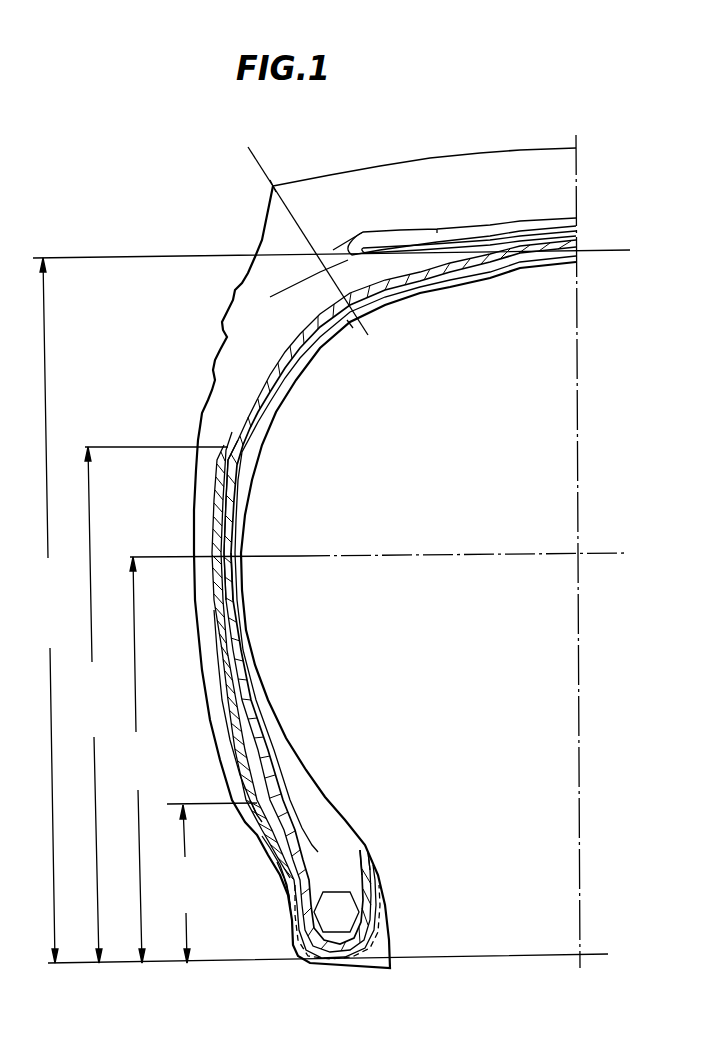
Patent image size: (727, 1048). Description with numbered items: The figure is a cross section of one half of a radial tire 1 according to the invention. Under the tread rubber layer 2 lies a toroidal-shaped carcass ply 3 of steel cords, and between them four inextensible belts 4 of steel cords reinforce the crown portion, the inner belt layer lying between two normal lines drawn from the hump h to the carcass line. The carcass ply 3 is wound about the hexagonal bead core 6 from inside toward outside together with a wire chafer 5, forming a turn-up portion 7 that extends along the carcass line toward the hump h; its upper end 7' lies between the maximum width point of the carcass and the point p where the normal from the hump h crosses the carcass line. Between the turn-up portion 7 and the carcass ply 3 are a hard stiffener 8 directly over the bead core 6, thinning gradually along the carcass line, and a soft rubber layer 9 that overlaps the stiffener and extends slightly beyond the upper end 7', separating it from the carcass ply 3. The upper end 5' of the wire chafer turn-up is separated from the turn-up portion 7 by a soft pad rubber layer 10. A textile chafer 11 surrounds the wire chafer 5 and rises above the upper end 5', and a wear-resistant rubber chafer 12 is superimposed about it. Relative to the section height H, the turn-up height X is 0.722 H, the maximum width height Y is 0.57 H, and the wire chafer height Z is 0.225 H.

The tire 1 is at (347, 165).
The tread rubber layer 2 is at (438, 158).
The carcass ply 3 is at (380, 283).
The inextensible belt 4 is at (520, 218).
The wire chafer 5 is at (375, 830).
The upper end of the turn-up portion of the wire chafer 5' is at (217, 789).
The bead core 6 is at (350, 910).
The turn-up portion of the carcass ply 7 is at (294, 695).
The upper end of the turn-up portion 7' is at (273, 492).
The hard stiffener 8 is at (293, 787).
The soft rubber layer 9 is at (222, 517).
The soft pad rubber layer 10 is at (233, 733).
The textile chafer 11 is at (262, 836).
The rubber chafer 12 is at (277, 862).
The hump h is at (273, 186).
The point P p is at (350, 324).
The section height H is at (331, 606).
The height of the turn-up portion X is at (155, 705).
The height of the maximum width point Y is at (376, 758).
The height of the upper end of the wire chafer turn-up Z is at (212, 883).